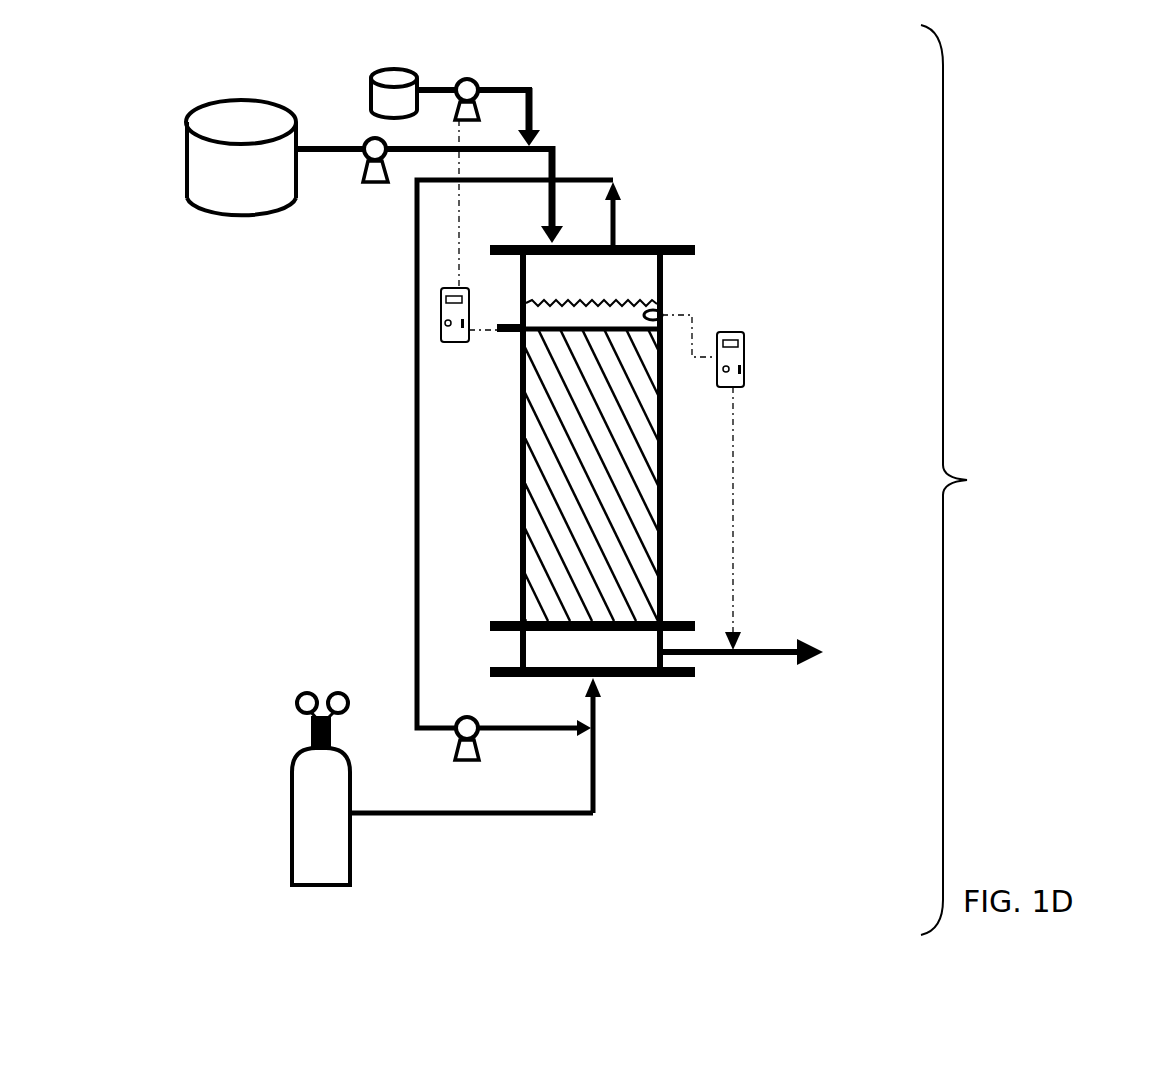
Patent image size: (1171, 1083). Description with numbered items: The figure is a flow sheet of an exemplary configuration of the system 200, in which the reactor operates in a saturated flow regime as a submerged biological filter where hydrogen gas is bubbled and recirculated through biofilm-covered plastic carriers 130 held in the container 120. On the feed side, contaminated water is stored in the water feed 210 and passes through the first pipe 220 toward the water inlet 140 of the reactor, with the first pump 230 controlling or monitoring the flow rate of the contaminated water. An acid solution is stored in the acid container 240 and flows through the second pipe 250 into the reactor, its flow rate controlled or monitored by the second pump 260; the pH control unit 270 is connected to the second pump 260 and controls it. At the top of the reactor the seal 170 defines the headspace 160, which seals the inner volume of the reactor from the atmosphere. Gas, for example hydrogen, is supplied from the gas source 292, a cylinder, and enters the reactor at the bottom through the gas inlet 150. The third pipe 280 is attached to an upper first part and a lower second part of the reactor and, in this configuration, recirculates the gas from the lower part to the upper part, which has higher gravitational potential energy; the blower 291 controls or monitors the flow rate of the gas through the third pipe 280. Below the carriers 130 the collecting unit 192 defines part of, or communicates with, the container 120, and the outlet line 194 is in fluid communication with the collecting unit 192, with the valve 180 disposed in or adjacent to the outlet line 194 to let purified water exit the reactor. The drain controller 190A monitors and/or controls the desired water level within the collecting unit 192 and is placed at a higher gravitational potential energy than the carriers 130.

The system 200 is at (1052, 470).
The water feed 210 is at (236, 212).
The first pipe 220 is at (330, 152).
The first pump 230 is at (385, 182).
The acid container 240 is at (387, 70).
The second pipe 250 is at (540, 123).
The second pump 260 is at (480, 88).
The water inlet 140 is at (553, 228).
The seal 170 is at (578, 245).
The headspace 160 is at (635, 270).
The carriers 130 is at (637, 545).
The container 120 is at (668, 492).
The outlet line 194 is at (663, 655).
The collecting unit 192 is at (637, 677).
The valve 180 is at (738, 647).
The gas inlet 150 is at (587, 677).
The third pipe 280 is at (417, 478).
The blower 291 is at (457, 747).
The gas source 292 is at (292, 793).
The pH control unit 270 is at (441, 325).
The drain controller 190A is at (744, 372).